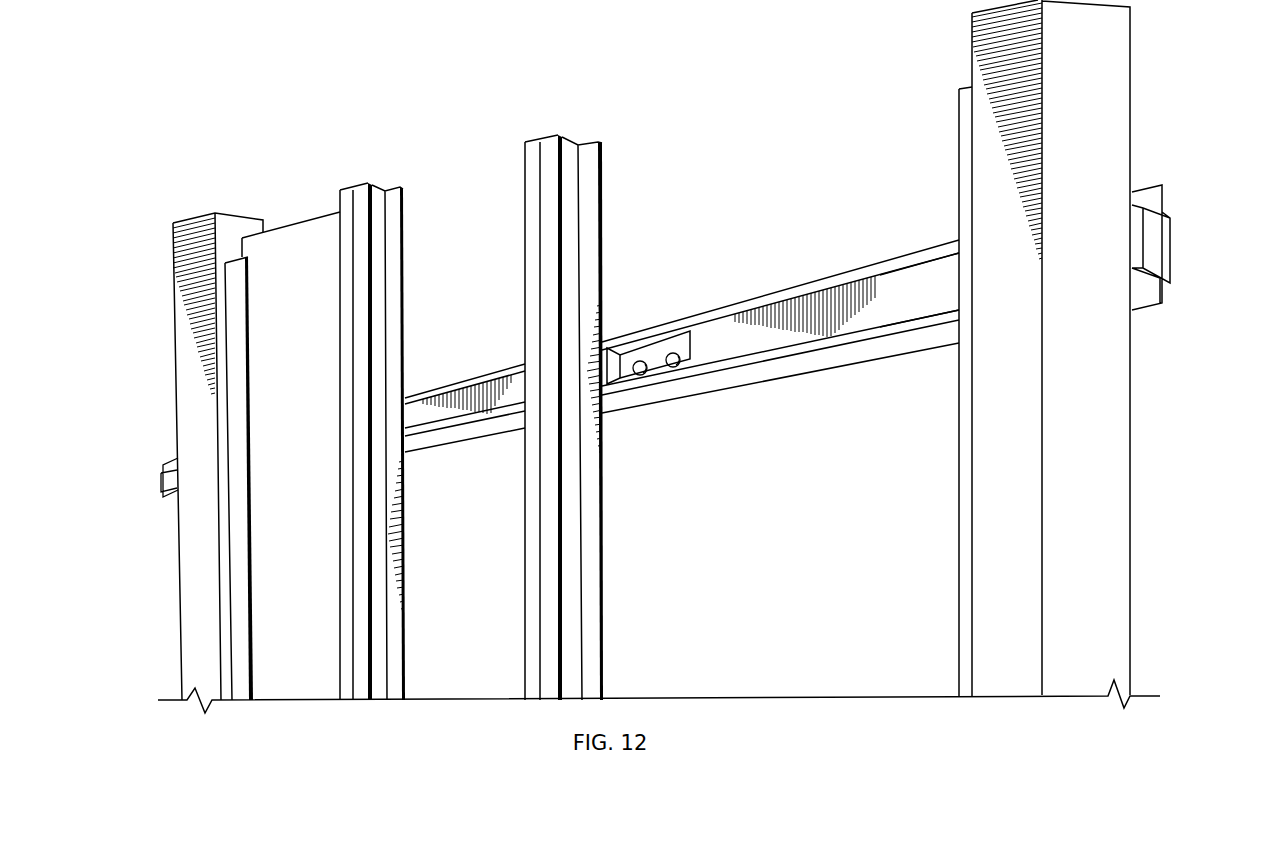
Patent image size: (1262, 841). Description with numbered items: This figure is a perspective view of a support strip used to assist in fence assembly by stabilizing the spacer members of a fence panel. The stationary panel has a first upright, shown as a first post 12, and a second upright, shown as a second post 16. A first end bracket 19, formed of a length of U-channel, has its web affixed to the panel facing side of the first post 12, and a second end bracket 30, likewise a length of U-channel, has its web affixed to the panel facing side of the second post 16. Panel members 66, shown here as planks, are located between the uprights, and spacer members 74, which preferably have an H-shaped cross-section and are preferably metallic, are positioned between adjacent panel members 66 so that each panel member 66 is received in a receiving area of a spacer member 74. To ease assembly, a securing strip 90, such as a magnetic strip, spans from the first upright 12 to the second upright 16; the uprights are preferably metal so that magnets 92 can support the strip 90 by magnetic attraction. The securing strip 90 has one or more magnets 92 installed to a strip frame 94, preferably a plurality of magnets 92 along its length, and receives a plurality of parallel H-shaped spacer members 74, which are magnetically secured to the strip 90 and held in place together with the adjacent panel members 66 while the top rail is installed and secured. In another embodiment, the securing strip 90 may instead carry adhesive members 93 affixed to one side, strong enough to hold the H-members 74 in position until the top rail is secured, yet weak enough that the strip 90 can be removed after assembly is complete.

The first post 12 is at (166, 274).
The second post 16 is at (1141, 66).
The first end bracket 19 is at (253, 677).
The second end bracket 30 is at (959, 142).
The panel member 66 is at (290, 226).
The spacer member 74 is at (405, 230).
The securing strip 90 is at (756, 294).
The magnet 92 is at (1163, 256).
The adhesive member 93 is at (923, 275).
The strip frame 94 is at (668, 322).